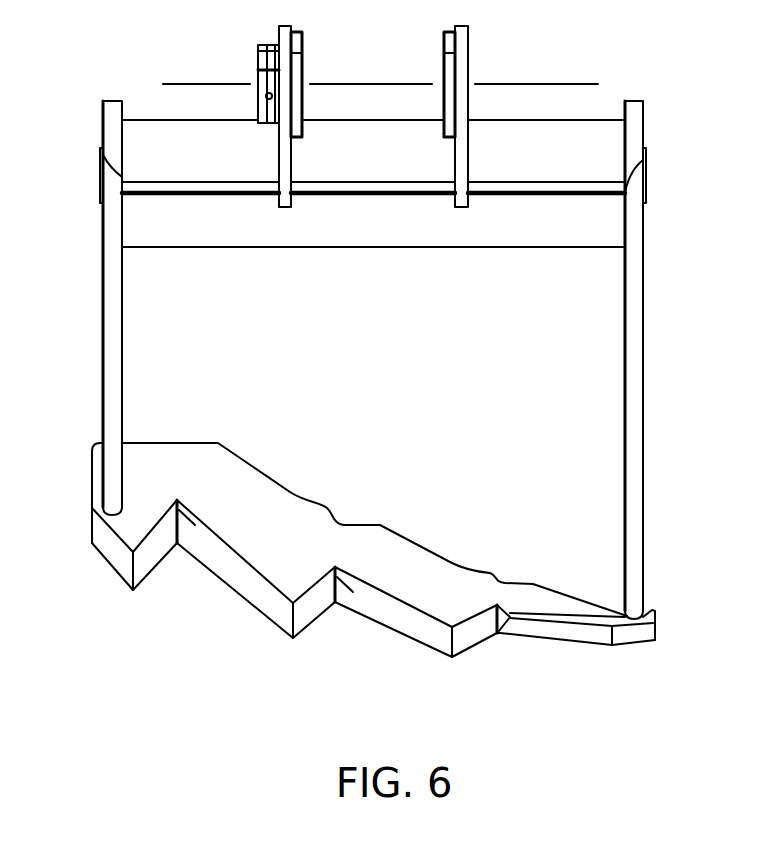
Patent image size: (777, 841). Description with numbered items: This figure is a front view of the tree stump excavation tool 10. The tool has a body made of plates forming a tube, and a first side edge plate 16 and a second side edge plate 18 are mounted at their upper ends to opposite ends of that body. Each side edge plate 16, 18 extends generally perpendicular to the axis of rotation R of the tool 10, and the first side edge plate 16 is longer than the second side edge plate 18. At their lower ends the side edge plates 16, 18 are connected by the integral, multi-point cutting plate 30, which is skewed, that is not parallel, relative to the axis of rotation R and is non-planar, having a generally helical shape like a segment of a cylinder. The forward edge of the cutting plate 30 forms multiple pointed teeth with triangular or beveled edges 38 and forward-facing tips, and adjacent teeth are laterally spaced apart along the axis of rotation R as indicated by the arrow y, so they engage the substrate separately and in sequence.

The tree stump excavation tool 10 is at (360, 392).
The first side edge plate 16 is at (112, 380).
The second side edge plate 18 is at (635, 407).
The cutting plate 30 is at (287, 508).
The beveled edges 38 is at (405, 618).
The axis of rotation R is at (562, 83).
The lateral spacing arrow y is at (153, 587).